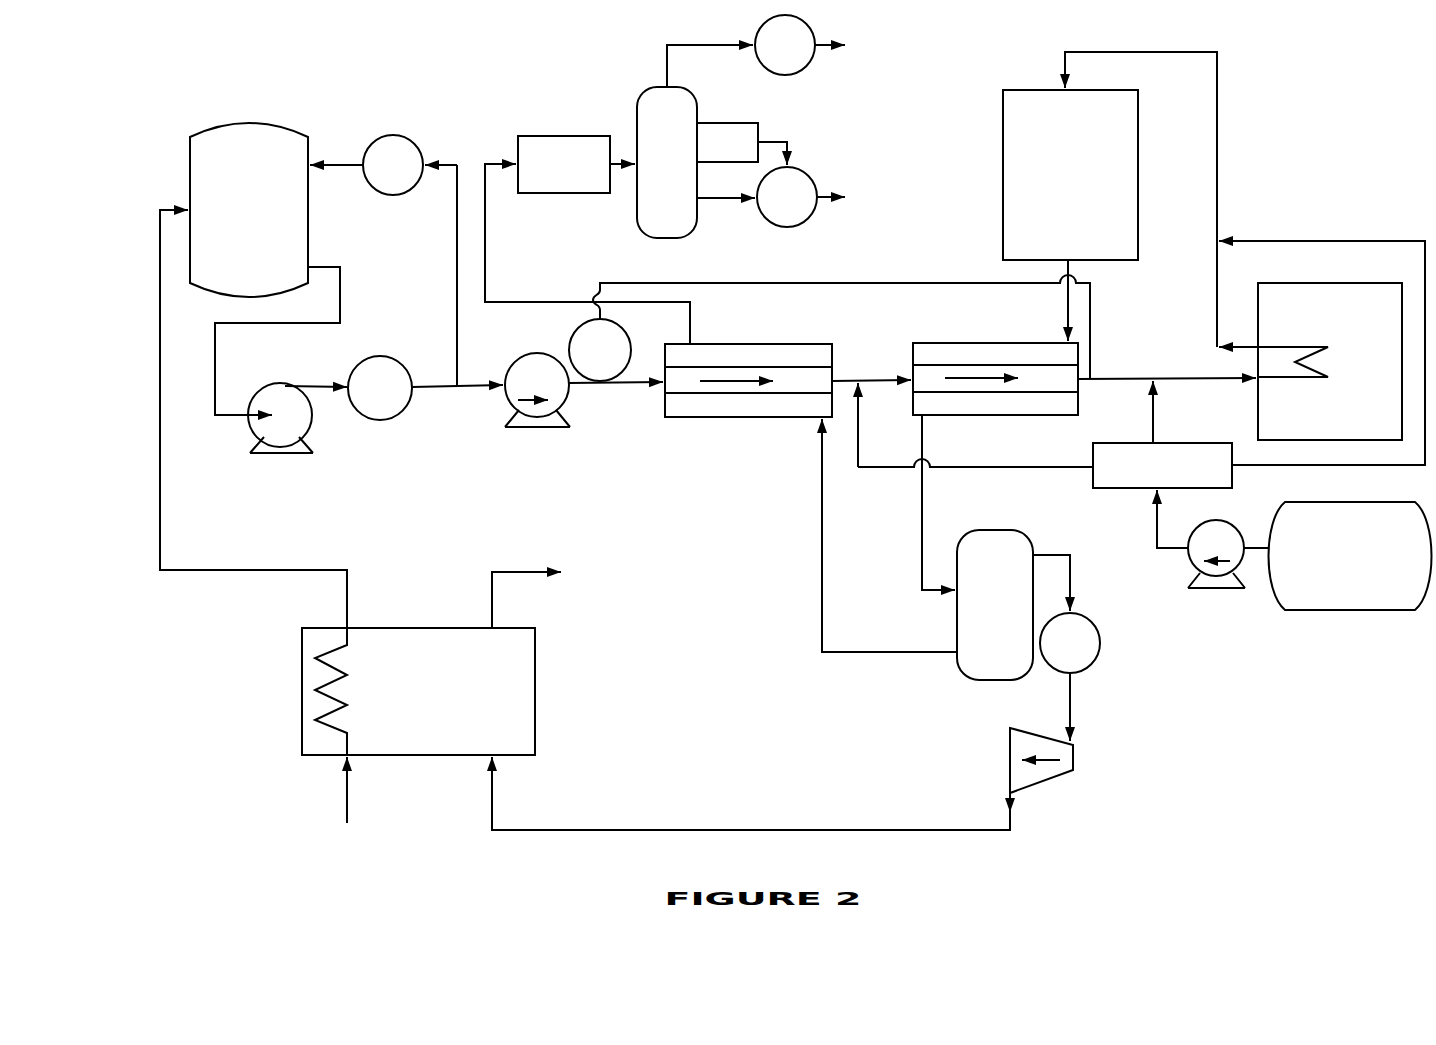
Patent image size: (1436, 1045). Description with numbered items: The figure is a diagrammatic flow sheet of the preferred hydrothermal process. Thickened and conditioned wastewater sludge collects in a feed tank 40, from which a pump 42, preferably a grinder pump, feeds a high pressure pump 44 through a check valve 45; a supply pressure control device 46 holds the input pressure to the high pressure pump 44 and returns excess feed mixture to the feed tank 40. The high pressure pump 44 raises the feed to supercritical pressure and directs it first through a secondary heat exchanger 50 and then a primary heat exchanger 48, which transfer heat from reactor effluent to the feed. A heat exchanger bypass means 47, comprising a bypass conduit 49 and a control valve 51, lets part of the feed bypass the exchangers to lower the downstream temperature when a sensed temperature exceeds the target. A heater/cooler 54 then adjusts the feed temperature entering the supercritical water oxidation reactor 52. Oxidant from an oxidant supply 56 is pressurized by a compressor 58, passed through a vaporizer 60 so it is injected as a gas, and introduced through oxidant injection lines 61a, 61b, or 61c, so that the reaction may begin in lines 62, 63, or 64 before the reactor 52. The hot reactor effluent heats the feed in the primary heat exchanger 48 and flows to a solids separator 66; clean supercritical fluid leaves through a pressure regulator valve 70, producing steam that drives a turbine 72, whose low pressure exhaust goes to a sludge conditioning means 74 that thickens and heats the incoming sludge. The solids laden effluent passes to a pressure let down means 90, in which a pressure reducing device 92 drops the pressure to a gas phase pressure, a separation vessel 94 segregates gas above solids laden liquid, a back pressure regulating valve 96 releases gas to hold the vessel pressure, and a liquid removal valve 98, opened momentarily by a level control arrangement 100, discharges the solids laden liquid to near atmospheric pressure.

The feed tank 40 is at (249, 210).
The pump 42 is at (268, 457).
The high pressure pump 44 is at (555, 428).
The check valve 45 is at (378, 356).
The supply pressure control device 46 is at (387, 196).
The heat exchanger bypass means 47 is at (551, 317).
The primary heat exchanger 48 is at (987, 338).
The bypass conduit 49 is at (808, 282).
The secondary heat exchanger 50 is at (737, 342).
The control valve 51 is at (618, 333).
The supercritical water oxidation reactor 52 is at (1070, 215).
The heater/cooler 54 is at (1330, 361).
The oxidant supply 56 is at (1350, 556).
The compressor 58 is at (1200, 590).
The vaporizer 60 is at (1091, 482).
The oxidant injection line 61a is at (961, 502).
The oxidant injection line 61b is at (1160, 425).
The oxidant injection line 61c is at (1272, 238).
The line 62 is at (853, 375).
The line 63 is at (1151, 375).
The line 64 is at (1215, 240).
The solids separator 66 is at (957, 605).
The pressure regulator valve 70 is at (1100, 641).
The turbine 72 is at (1048, 782).
The sludge conditioning means 74 is at (429, 544).
The pressure let down means 90 is at (743, 146).
The pressure reducing device 92 is at (527, 198).
The separation vessel 94 is at (637, 224).
The back pressure regulating valve 96 is at (815, 61).
The liquid removal valve 98 is at (768, 222).
The level control arrangement 100 is at (713, 118).